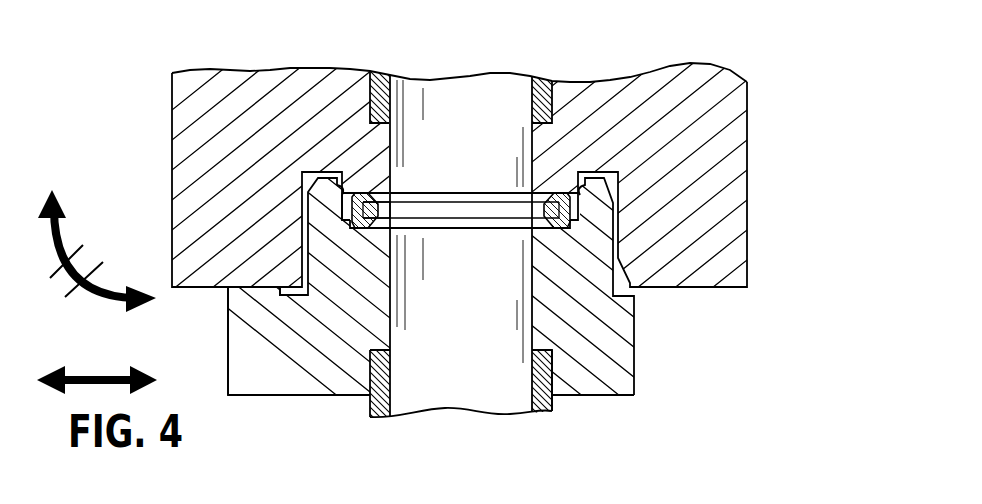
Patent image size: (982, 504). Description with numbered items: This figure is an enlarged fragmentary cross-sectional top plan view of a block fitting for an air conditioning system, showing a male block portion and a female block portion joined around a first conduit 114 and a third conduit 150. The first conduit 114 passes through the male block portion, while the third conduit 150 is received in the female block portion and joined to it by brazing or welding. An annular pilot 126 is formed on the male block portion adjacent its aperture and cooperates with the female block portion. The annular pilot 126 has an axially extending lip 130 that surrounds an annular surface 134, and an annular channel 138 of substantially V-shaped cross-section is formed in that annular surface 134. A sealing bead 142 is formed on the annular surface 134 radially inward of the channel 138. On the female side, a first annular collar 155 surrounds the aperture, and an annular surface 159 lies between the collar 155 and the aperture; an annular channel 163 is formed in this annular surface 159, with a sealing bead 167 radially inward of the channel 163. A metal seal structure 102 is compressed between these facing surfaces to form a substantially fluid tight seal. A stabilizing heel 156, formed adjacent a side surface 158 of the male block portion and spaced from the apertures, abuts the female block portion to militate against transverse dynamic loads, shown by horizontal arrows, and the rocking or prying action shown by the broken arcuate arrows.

The metal seal structure 102 is at (548, 232).
The first conduit 114 is at (532, 378).
The annular pilot 126 is at (308, 220).
The axially extending lip 130 is at (333, 171).
The annular surface 134 is at (350, 222).
The annular channel 138 is at (356, 229).
The sealing bead 142 is at (380, 208).
The third conduit 150 is at (532, 98).
The first annular collar 155 is at (302, 173).
The stabilizing heel 156 is at (248, 272).
The side surface 158 is at (215, 342).
The annular surface 159 is at (306, 171).
The annular channel 163 is at (352, 196).
The sealing bead 167 is at (376, 203).